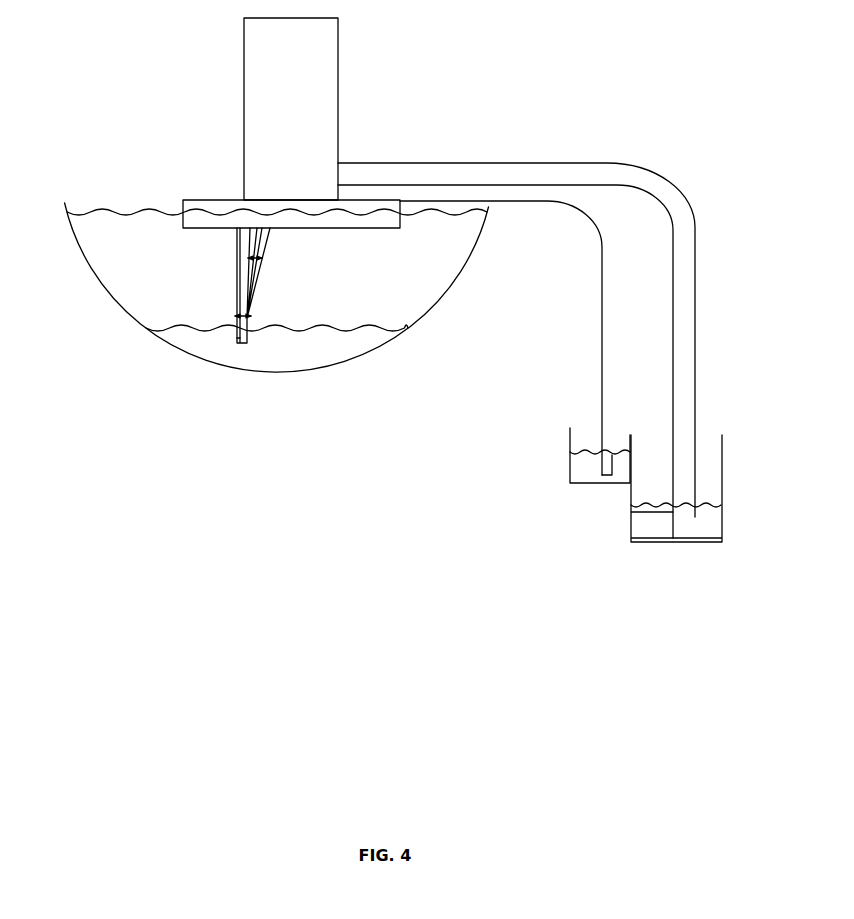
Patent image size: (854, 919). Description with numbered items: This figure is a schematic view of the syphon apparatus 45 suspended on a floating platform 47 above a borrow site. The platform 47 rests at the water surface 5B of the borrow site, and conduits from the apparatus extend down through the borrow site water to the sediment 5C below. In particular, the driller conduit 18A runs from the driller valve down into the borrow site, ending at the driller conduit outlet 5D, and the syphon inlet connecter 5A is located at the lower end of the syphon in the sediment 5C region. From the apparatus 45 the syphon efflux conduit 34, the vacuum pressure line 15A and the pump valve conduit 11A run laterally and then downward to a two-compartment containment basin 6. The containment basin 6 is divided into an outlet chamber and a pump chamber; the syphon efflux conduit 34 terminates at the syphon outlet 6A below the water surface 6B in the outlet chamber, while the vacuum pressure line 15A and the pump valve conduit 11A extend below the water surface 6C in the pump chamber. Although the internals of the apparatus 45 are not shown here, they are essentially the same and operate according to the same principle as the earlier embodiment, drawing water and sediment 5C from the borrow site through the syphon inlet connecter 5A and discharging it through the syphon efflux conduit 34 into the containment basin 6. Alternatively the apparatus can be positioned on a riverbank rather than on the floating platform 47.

The apparatus 45 is at (244, 68).
The platform 47 is at (195, 200).
The water surface 5B is at (101, 207).
The driller conduit 18A is at (237, 296).
The sediment 5C is at (150, 326).
The syphon inlet connecter 5A is at (247, 355).
The driller conduit outlet 5D is at (230, 349).
The syphon efflux conduit 34 is at (602, 302).
The syphon outlet 6A is at (610, 450).
The vacuum pressure line 15A is at (696, 280).
The pump valve conduit 11A is at (673, 312).
The water surface 6B is at (590, 450).
The containment basin 6 is at (638, 525).
The water surface 6C is at (707, 500).